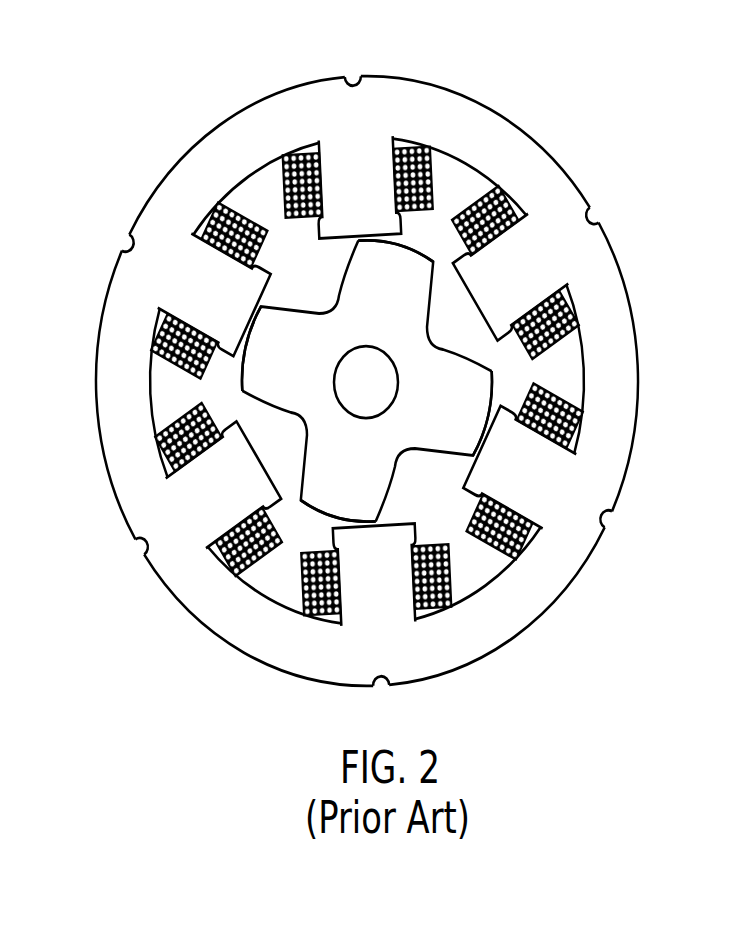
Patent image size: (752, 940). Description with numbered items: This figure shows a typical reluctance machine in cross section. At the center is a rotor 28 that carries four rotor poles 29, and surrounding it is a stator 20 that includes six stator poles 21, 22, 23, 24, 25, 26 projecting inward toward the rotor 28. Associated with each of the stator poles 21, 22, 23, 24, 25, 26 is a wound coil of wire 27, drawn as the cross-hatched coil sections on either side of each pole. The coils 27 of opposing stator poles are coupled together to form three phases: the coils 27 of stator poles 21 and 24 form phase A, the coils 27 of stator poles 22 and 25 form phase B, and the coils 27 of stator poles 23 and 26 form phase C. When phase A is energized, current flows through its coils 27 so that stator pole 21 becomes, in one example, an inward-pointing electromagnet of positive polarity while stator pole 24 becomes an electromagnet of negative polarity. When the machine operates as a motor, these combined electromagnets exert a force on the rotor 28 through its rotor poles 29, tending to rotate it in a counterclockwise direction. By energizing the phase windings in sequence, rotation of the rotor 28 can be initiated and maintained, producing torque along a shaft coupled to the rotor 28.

The stator 20 is at (160, 169).
The stator pole 21 is at (368, 232).
The stator pole 22 is at (489, 301).
The stator pole 23 is at (489, 454).
The stator pole 24 is at (362, 537).
The stator pole 25 is at (243, 463).
The stator pole 26 is at (242, 312).
The wound coil of wire 27 is at (441, 182).
The rotor 28 is at (440, 340).
The rotor poles 29 is at (393, 248).